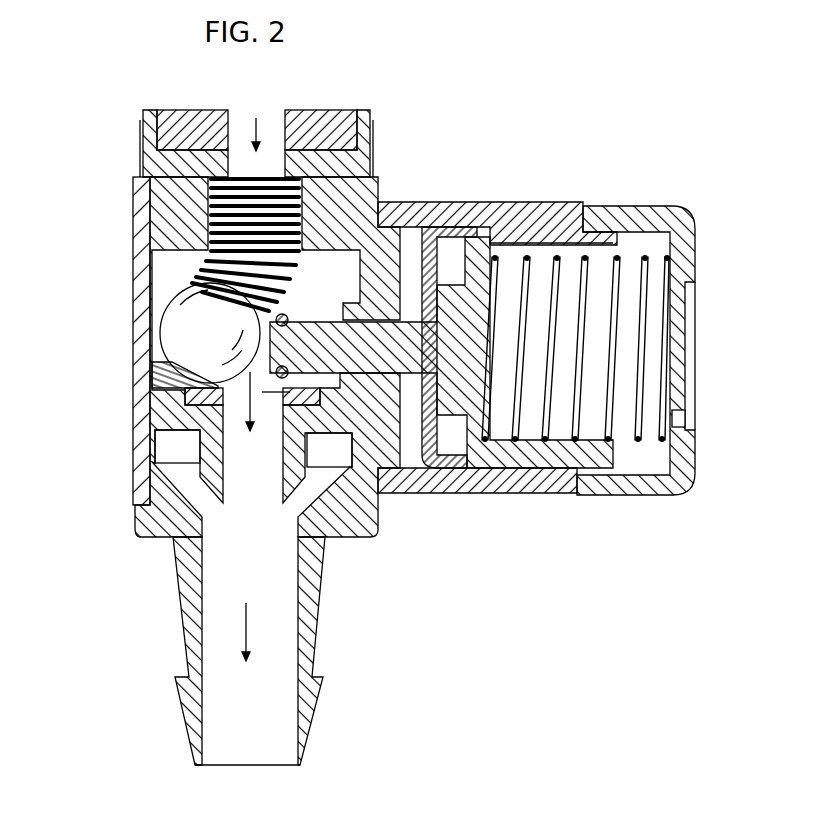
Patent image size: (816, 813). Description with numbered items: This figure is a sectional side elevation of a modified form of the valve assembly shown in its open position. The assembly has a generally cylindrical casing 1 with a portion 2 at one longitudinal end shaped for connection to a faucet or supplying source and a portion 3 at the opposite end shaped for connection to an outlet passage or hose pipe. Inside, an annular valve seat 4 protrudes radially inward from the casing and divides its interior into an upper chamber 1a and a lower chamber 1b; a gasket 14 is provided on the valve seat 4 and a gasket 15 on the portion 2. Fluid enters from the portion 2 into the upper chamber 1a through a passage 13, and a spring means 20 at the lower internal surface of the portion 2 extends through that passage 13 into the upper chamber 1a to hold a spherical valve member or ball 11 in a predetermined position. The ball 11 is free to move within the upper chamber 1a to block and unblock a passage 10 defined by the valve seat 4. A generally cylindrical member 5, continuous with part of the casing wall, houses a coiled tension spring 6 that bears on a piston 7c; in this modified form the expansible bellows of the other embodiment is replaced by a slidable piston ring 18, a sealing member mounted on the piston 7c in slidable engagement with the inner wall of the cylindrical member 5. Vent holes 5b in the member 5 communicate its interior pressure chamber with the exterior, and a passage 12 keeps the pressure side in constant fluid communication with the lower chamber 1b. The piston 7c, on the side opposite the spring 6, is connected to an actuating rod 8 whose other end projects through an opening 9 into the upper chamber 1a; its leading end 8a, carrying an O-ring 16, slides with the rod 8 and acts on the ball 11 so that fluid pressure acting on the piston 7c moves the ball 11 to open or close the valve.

The casing 1 is at (142, 497).
The upper chamber 1a is at (165, 265).
The lower chamber 1b is at (155, 520).
The portion 2 is at (270, 111).
The portion 3 is at (180, 641).
The annular valve seat 4 is at (176, 416).
The cylindrical member 5 is at (683, 224).
The vent holes 5b is at (688, 285).
The coiled tension spring 6 is at (612, 445).
The piston 7c is at (500, 470).
The actuating rod 8 is at (298, 385).
The leading end 8a is at (255, 400).
The opening 9 is at (393, 250).
The passage 10 is at (197, 440).
The ball 11 is at (185, 330).
The passage 12 is at (367, 452).
The passage 13 is at (238, 168).
The gasket 14 is at (186, 392).
The gasket 15 is at (196, 134).
The O-ring 16 is at (305, 403).
The piston ring 18 is at (472, 240).
The spring means 20 is at (230, 222).